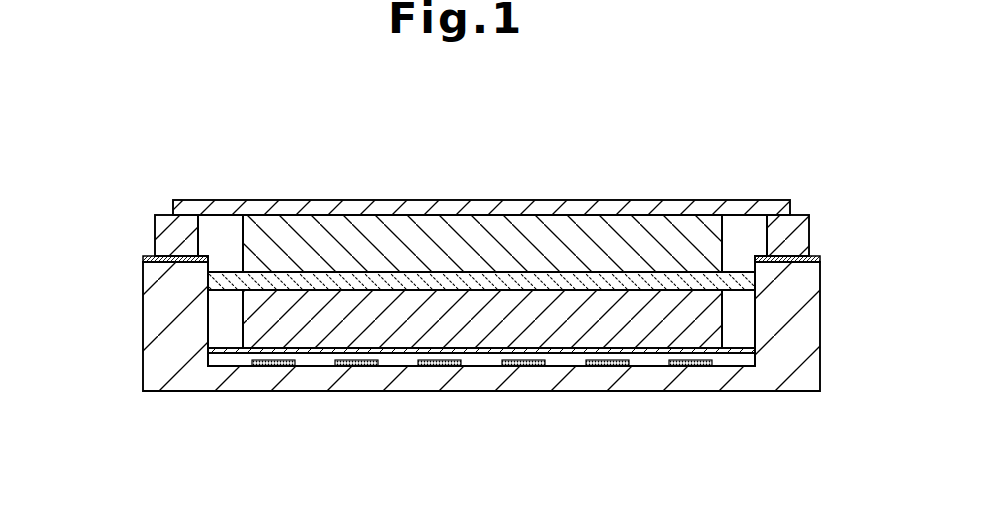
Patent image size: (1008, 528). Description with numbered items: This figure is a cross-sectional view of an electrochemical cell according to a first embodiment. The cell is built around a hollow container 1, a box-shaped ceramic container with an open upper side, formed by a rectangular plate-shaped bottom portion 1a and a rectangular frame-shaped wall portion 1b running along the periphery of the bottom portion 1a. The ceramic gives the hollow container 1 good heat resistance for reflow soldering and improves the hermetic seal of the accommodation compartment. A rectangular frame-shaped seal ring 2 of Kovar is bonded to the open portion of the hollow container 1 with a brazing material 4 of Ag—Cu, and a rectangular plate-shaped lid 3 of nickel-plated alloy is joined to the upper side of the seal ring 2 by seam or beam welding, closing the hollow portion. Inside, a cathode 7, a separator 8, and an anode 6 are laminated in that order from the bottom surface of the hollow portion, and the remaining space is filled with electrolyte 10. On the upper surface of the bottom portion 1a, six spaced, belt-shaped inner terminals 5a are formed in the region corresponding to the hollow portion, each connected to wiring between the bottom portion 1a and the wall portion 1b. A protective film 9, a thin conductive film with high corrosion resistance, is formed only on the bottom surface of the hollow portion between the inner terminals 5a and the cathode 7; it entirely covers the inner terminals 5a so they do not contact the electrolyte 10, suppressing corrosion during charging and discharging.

The hollow container 1 is at (431, 326).
The bottom portion 1a is at (420, 376).
The wall portion 1b is at (152, 330).
The seal ring 2 is at (155, 217).
The lid 3 is at (633, 200).
The brazing material 4 is at (145, 256).
The inner terminals 5a is at (273, 366).
The anode 6 is at (493, 218).
The cathode 7 is at (727, 350).
The separator 8 is at (337, 272).
The protective film 9 is at (650, 366).
The electrolyte 10 is at (741, 218).